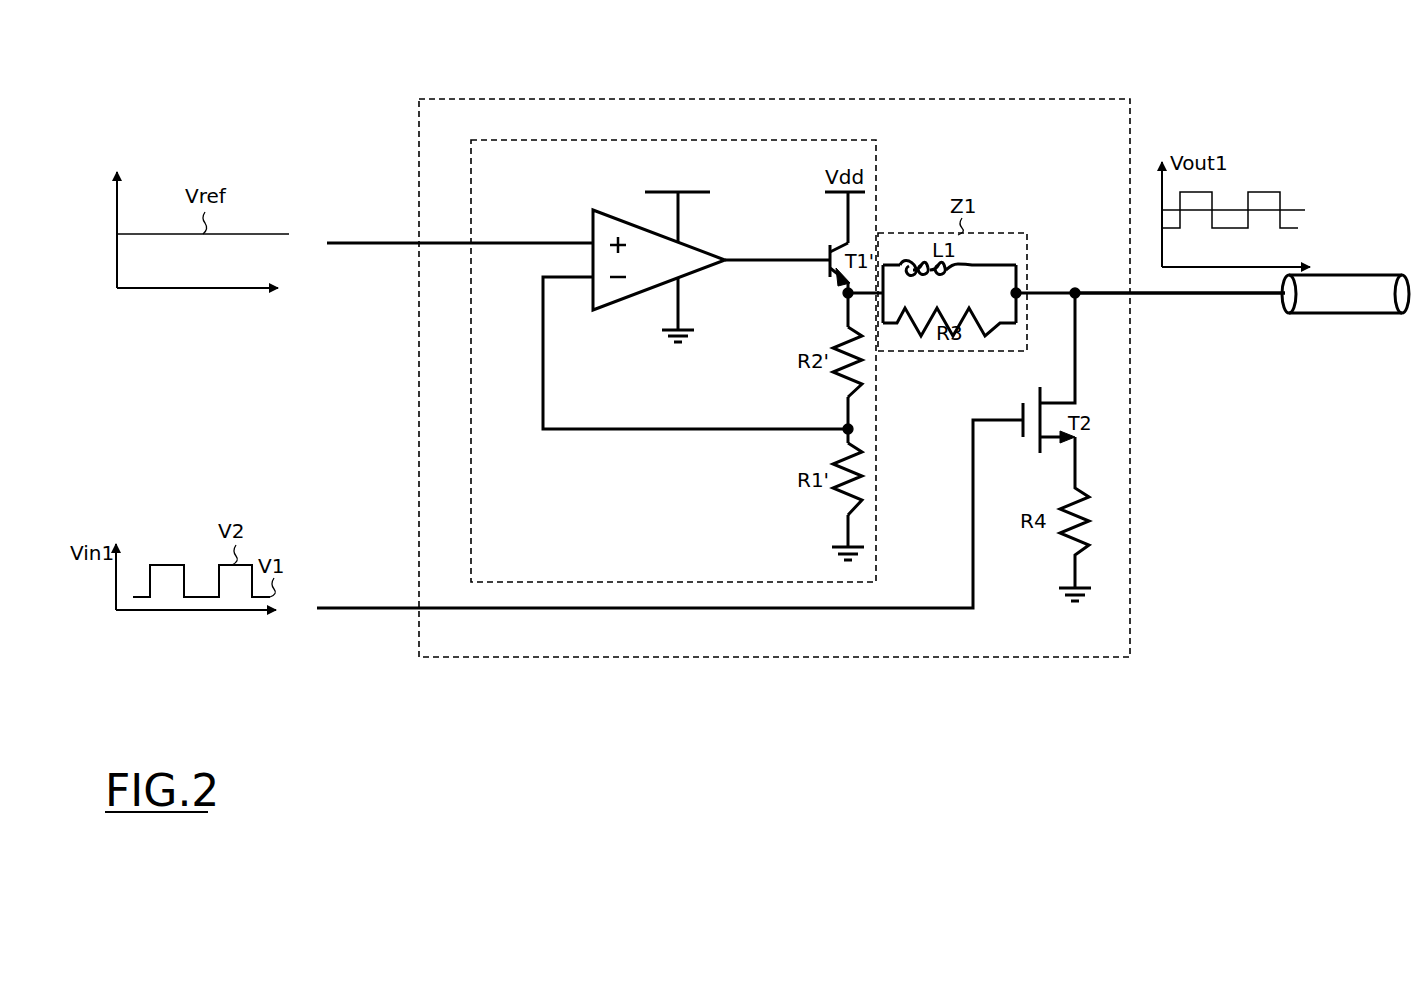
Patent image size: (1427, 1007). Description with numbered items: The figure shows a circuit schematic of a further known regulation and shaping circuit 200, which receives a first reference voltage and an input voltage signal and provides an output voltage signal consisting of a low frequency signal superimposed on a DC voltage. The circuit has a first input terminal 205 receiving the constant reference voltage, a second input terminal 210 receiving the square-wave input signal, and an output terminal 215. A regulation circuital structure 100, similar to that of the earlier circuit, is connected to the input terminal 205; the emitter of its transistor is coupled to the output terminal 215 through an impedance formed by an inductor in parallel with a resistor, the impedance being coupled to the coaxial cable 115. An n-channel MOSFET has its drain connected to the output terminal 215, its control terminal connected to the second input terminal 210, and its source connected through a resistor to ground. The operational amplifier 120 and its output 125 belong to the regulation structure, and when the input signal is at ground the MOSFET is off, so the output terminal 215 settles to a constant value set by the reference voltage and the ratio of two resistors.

The regulation and shaping circuit 200 is at (902, 88).
The regulation circuital structure 100 is at (878, 200).
The operational amplifier 120 is at (603, 211).
The amplifier output 125 is at (748, 267).
The first input terminal 205 is at (348, 243).
The second input terminal 210 is at (368, 608).
The output terminal 215 is at (1247, 298).
The coaxial cable 115 is at (1356, 275).